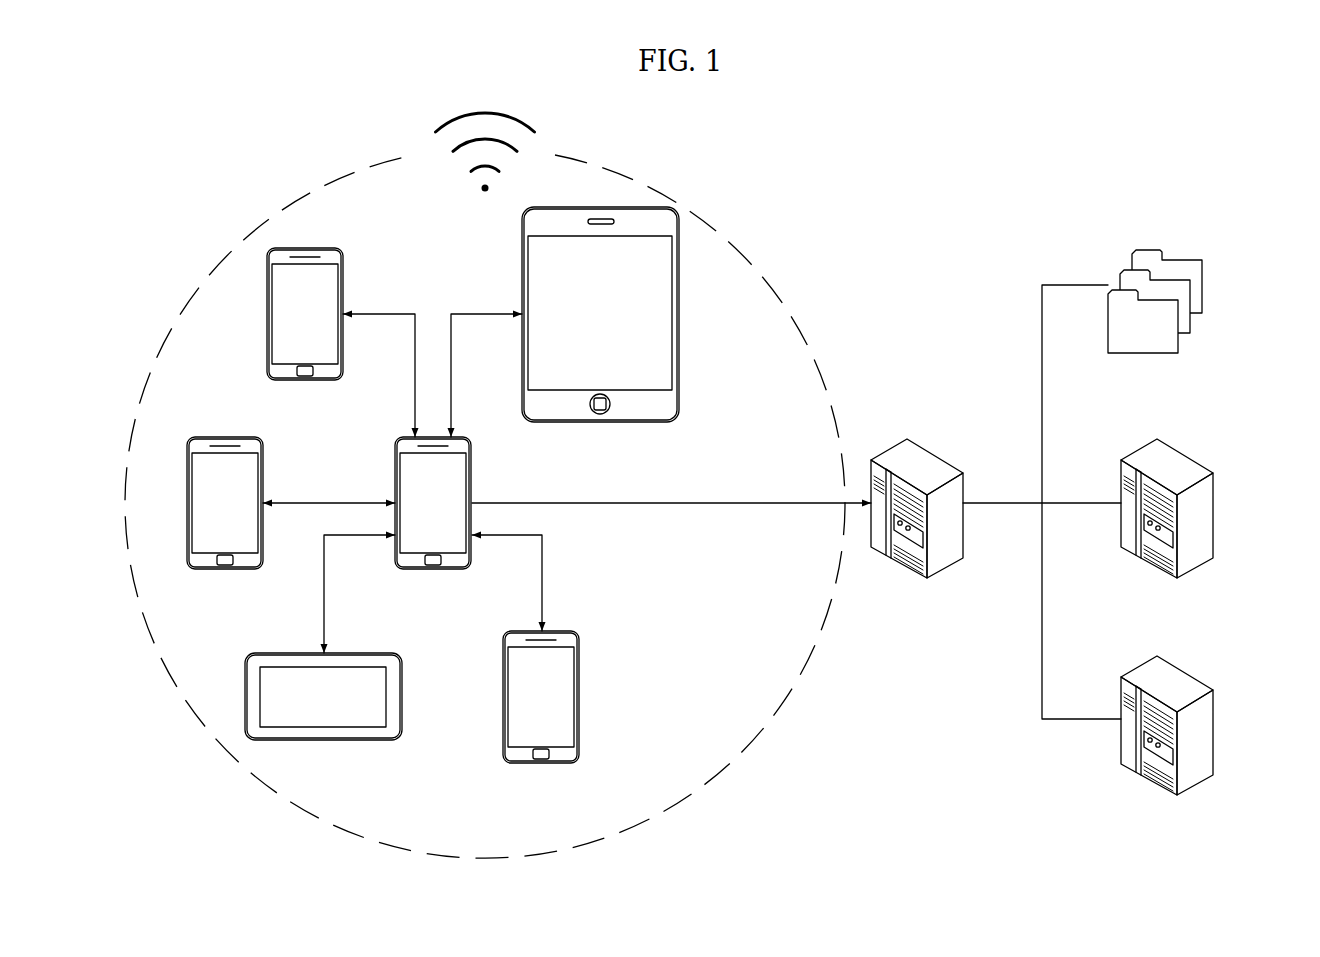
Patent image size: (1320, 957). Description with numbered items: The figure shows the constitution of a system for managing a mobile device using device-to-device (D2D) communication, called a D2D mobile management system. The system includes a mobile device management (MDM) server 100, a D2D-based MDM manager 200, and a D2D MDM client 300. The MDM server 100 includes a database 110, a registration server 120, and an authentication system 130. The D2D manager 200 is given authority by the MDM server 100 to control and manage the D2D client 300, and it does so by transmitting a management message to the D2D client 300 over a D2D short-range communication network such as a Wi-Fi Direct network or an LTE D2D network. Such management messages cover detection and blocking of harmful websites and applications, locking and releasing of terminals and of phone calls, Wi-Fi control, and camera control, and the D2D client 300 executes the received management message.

The mobile device management (MDM) server 100 is at (931, 452).
The database 110 is at (1181, 262).
The registration server 120 is at (1214, 513).
The authentication system 130 is at (1214, 730).
The D2D-based MDM manager 200 is at (473, 487).
The D2D MDM client 300 is at (680, 240).